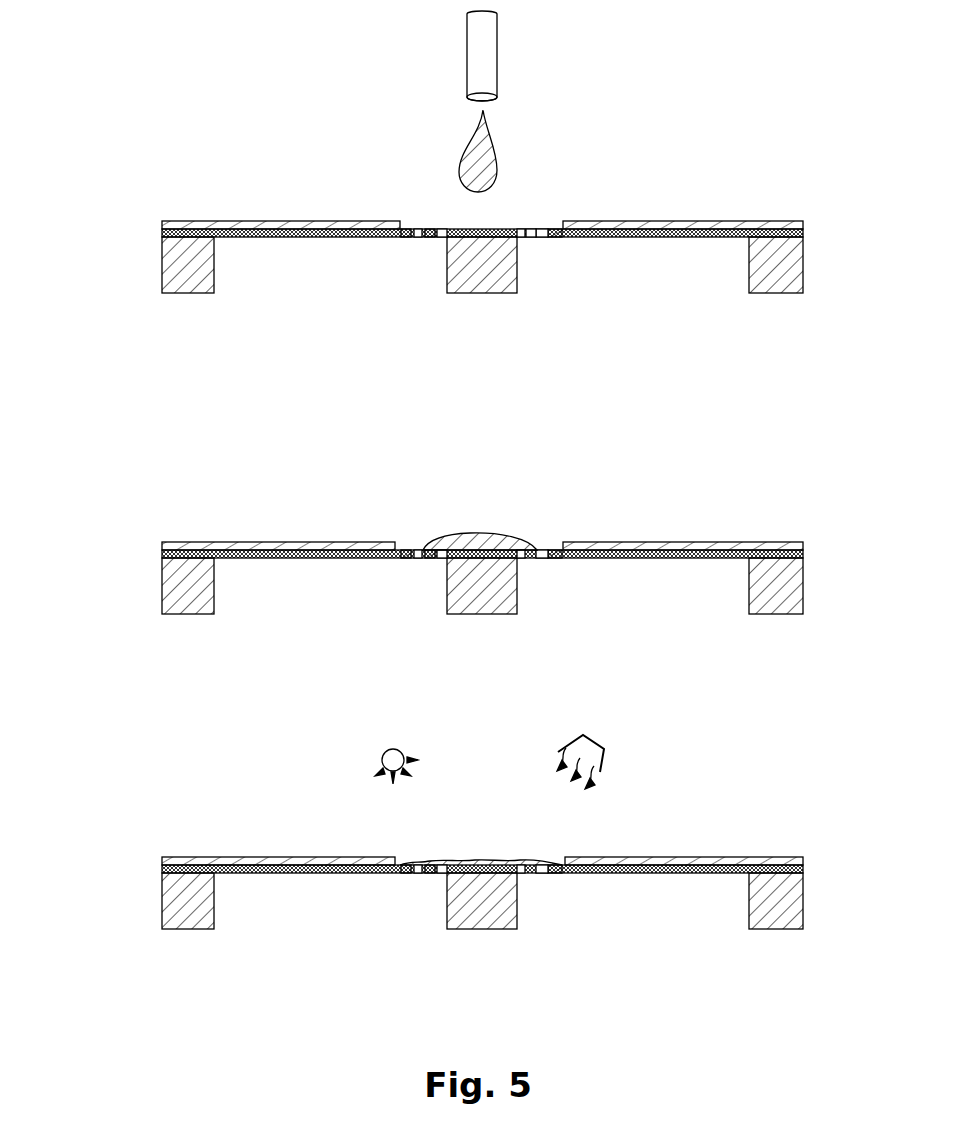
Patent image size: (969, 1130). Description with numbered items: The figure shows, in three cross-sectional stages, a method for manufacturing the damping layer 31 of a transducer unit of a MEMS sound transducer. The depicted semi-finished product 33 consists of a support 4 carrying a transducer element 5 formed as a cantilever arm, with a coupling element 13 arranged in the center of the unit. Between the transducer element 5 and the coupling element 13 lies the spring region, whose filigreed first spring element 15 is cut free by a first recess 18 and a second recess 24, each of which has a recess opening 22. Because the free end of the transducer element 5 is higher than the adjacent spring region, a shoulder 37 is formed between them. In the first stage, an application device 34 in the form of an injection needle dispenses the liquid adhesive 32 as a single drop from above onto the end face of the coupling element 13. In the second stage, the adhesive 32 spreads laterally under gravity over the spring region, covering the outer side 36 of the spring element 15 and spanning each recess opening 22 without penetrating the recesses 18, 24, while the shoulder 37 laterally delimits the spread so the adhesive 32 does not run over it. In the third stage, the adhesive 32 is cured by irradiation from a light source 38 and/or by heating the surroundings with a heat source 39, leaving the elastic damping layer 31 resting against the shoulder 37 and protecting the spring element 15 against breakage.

The support 4 is at (186, 266).
The transducer element 5 is at (300, 221).
The coupling element 13 is at (484, 275).
The first spring element 15 is at (412, 229).
The first recess 18 is at (418, 240).
The recess opening 22 is at (433, 229).
The second recess 24 is at (404, 240).
The damping layer 31 is at (476, 861).
The adhesive 32 is at (497, 163).
The semi-finished product 33 is at (158, 243).
The application device 34 is at (478, 62).
The outer side 36 is at (530, 229).
The shoulder 37 is at (403, 229).
The light source 38 is at (393, 760).
The heat source 39 is at (601, 749).